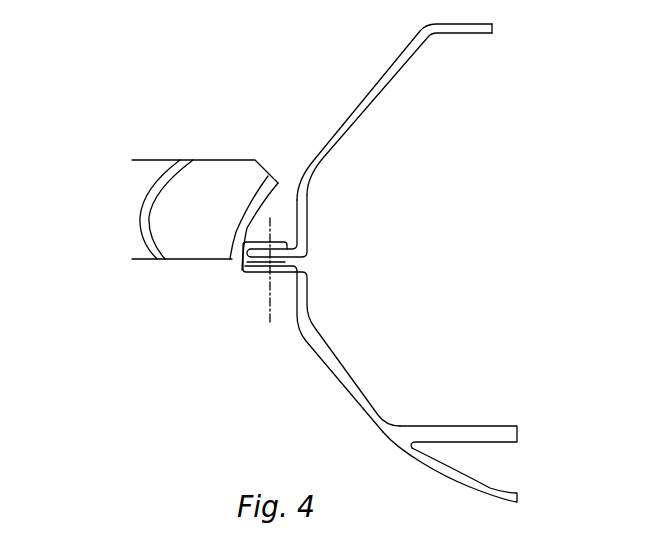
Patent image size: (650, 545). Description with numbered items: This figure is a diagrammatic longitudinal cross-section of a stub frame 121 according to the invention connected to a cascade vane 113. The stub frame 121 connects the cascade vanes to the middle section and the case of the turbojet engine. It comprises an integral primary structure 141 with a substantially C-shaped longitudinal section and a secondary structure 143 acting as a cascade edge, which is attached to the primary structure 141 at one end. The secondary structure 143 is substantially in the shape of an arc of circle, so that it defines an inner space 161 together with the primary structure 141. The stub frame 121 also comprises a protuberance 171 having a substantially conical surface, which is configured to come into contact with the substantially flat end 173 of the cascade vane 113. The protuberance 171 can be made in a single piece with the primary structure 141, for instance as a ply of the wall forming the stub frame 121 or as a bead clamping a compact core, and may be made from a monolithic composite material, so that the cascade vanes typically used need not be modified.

The cascade vane 113 is at (209, 182).
The stub frame 121 is at (421, 272).
The primary structure 141 is at (393, 80).
The secondary structure 143 is at (452, 485).
The inner space 161 is at (490, 471).
The protuberance 171 is at (262, 263).
The flat end 173 is at (237, 260).